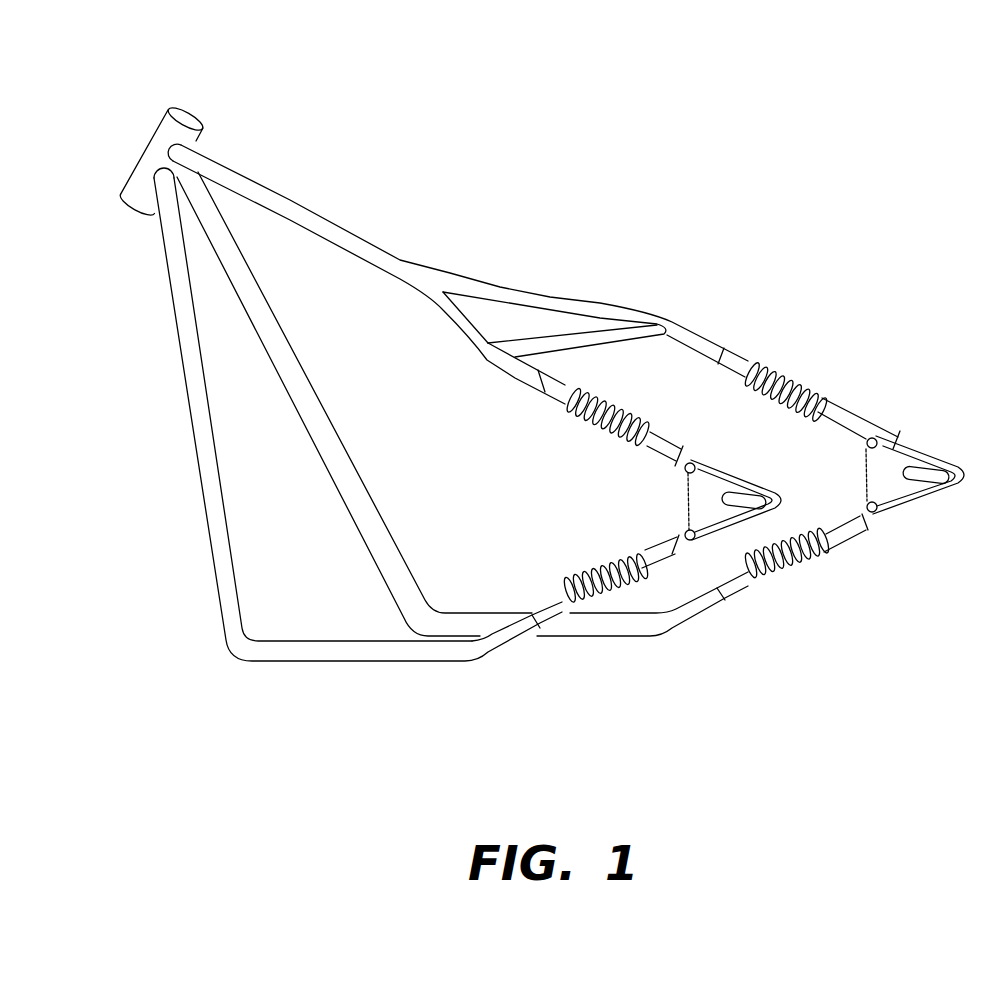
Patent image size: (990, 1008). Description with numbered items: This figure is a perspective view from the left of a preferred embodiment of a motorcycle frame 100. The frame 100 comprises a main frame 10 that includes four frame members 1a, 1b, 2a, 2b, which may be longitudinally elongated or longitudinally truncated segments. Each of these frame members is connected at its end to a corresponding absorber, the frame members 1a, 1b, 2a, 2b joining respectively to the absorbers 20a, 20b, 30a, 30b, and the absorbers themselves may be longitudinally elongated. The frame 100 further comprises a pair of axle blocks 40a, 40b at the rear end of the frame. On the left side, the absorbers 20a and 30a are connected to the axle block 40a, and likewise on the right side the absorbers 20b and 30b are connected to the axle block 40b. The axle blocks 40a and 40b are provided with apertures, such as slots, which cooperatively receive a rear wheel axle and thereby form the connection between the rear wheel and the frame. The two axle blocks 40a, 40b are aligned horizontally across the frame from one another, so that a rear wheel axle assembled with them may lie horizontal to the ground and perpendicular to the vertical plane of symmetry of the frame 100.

The frame 100 is at (634, 106).
The main frame 10 is at (310, 218).
The frame member 1a is at (508, 367).
The frame member 1b is at (694, 334).
The frame member 2a is at (512, 640).
The frame member 2b is at (692, 610).
The absorber 20a is at (597, 420).
The absorber 20b is at (791, 383).
The absorber 30a is at (616, 595).
The absorber 30b is at (797, 570).
The axle block 40a is at (705, 480).
The axle block 40b is at (893, 450).